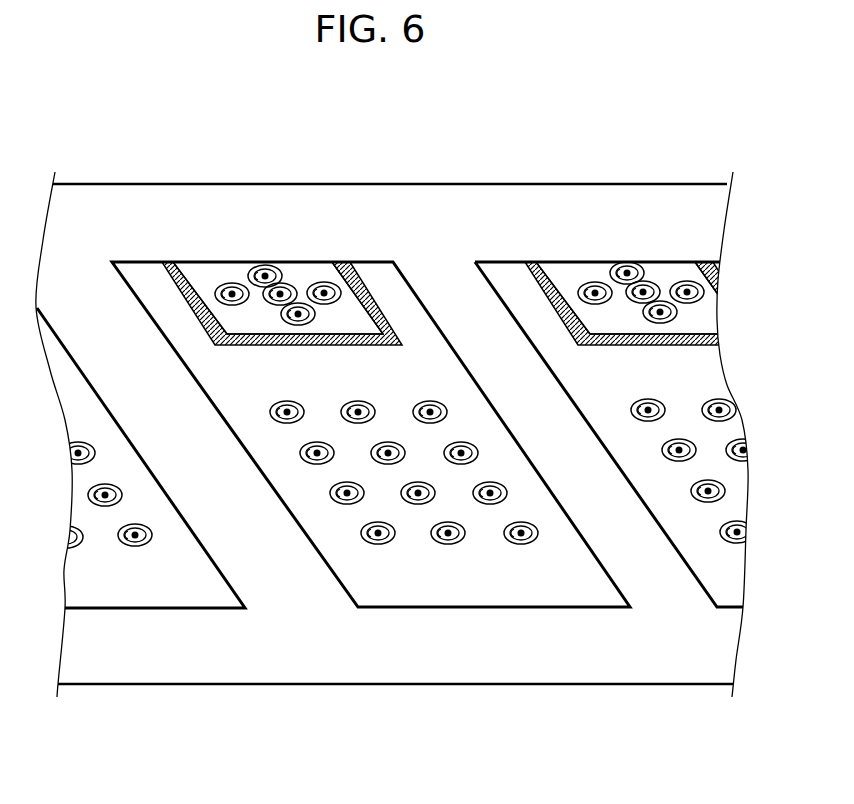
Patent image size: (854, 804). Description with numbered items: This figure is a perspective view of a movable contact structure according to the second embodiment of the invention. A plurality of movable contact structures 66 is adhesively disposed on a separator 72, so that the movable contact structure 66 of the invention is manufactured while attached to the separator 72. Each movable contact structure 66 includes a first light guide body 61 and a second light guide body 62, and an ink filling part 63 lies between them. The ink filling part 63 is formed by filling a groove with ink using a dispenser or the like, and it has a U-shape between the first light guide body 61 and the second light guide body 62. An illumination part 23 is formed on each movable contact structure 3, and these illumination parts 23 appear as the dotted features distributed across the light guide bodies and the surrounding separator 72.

The separator 72 is at (412, 203).
The movable contact structure 66 is at (408, 510).
The second light guide body 62 is at (515, 583).
The ink filling part 63 is at (183, 280).
The first light guide body 61 is at (303, 270).
The illumination part 23 is at (404, 331).
The movable contact structure 3 is at (462, 451).